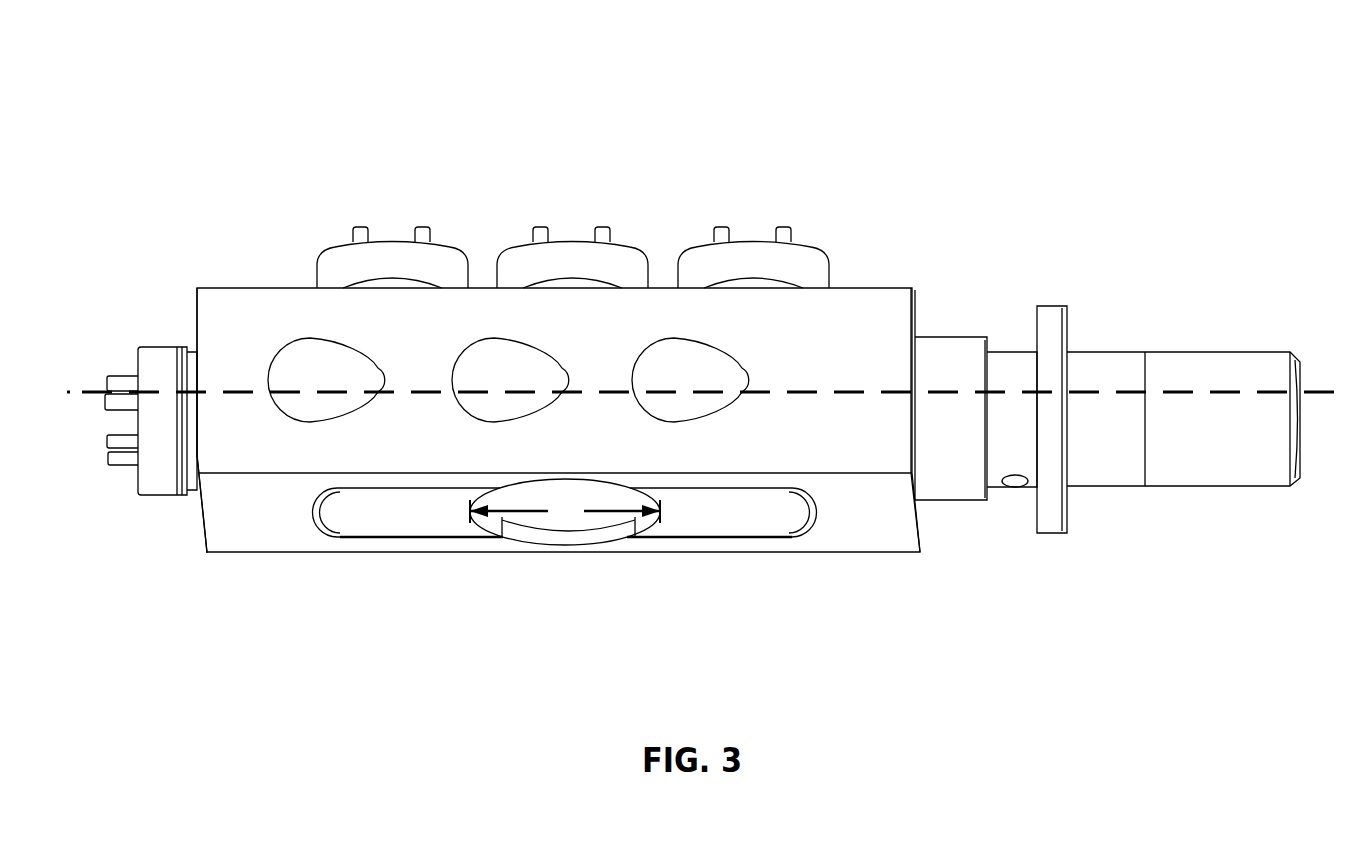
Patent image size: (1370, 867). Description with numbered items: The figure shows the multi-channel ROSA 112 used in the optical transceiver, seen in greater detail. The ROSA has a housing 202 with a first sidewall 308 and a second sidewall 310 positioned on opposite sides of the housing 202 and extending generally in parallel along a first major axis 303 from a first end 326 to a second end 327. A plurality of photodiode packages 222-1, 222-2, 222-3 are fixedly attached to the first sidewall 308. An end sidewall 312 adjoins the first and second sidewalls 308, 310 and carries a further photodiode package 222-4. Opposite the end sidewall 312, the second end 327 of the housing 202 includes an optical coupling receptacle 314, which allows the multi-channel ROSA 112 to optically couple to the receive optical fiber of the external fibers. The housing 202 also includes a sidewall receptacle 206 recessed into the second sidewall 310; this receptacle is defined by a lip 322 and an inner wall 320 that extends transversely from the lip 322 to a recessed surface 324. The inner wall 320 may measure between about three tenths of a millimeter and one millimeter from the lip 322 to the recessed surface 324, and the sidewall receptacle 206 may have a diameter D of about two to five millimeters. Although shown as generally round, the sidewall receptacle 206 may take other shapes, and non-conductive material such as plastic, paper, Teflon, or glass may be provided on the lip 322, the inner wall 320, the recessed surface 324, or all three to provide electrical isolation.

The multi-channel ROSA 112 is at (400, 90).
The housing 202 is at (256, 295).
The end sidewall 312 is at (193, 283).
The first end 326 is at (196, 550).
The first sidewall 308 is at (868, 280).
The photodiode package 222-4 is at (158, 355).
The photodiode package 222-3 is at (323, 265).
The photodiode package 222-2 is at (511, 268).
The photodiode package 222-1 is at (693, 262).
The second end 327 is at (928, 320).
The optical coupling receptacle 314 is at (1222, 362).
The first major axis 303 is at (1325, 392).
The second sidewall 310 is at (777, 545).
The sidewall receptacle 206 is at (553, 482).
The inner wall 320 is at (484, 522).
The lip 322 is at (563, 545).
The recessed surface 324 is at (610, 520).